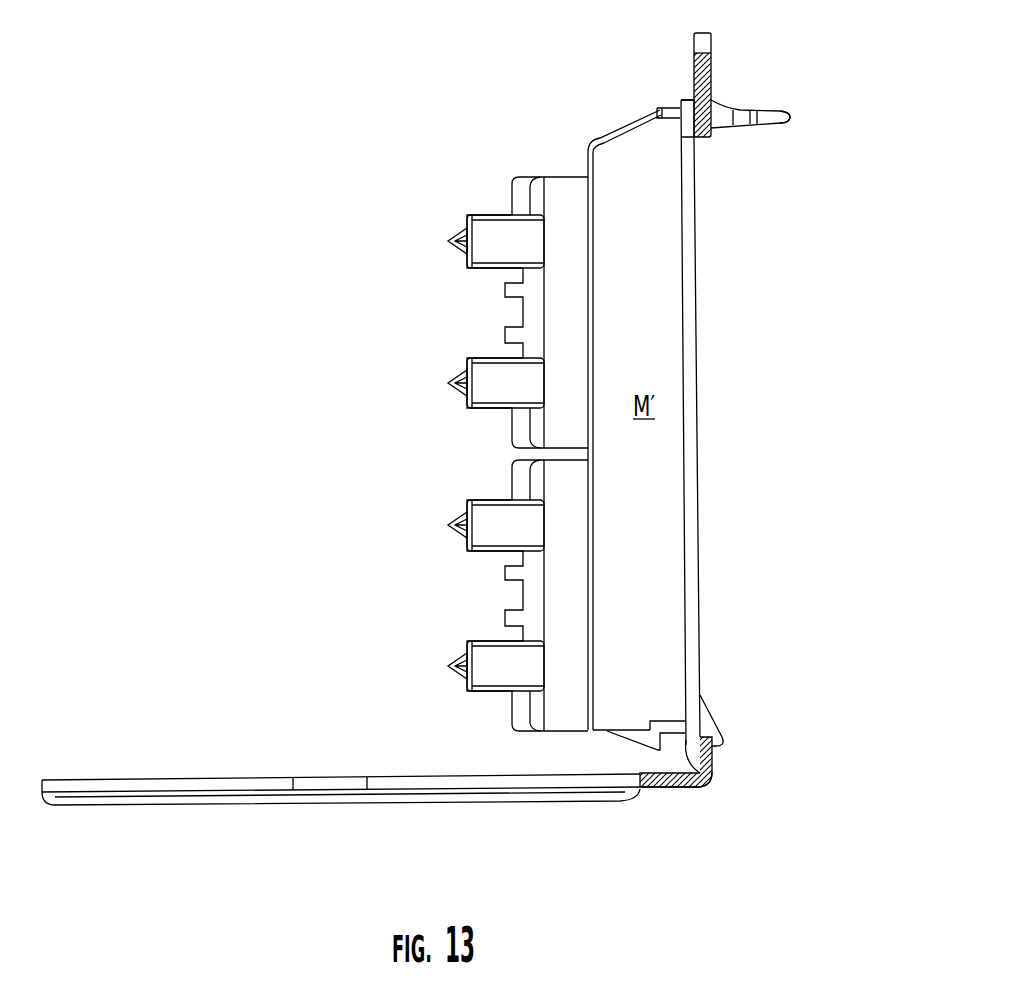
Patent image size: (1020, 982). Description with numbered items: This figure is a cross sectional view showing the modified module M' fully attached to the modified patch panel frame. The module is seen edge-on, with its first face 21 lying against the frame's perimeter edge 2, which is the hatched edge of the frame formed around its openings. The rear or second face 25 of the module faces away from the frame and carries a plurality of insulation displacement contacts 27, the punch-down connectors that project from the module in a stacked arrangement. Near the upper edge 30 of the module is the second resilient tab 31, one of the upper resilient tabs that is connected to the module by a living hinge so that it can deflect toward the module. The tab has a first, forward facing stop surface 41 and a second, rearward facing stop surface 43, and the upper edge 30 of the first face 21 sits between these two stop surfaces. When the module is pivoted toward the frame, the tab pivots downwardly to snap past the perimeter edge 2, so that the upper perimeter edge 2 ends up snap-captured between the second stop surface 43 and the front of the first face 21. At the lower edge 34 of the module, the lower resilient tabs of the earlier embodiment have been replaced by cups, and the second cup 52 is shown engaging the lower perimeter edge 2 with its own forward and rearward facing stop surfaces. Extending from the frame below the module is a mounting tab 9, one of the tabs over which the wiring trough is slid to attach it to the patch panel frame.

The perimeter edge 2 is at (712, 82).
The mounting tab 9 is at (195, 780).
The first face 21 is at (722, 294).
The second face 25 is at (483, 160).
The insulation displacement contacts 27 is at (448, 526).
The upper edge 30 is at (688, 100).
The second resilient tab 31 is at (790, 98).
The lower edge 34 is at (688, 787).
The first forward facing stop surface 41 is at (668, 108).
The second rearward facing stop surface 43 is at (712, 115).
The second cup 52 is at (727, 698).